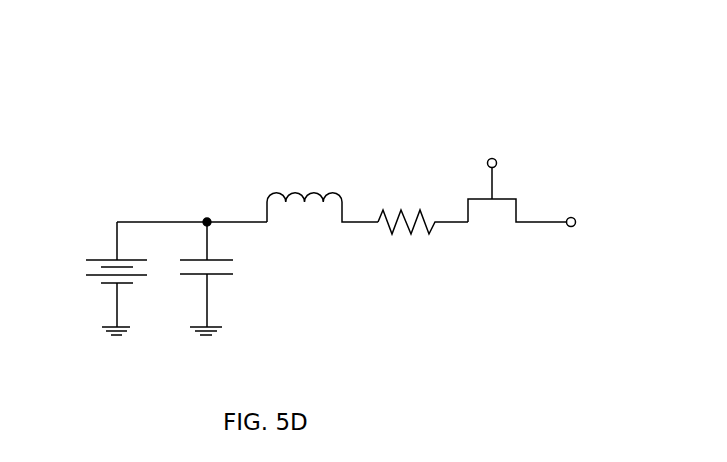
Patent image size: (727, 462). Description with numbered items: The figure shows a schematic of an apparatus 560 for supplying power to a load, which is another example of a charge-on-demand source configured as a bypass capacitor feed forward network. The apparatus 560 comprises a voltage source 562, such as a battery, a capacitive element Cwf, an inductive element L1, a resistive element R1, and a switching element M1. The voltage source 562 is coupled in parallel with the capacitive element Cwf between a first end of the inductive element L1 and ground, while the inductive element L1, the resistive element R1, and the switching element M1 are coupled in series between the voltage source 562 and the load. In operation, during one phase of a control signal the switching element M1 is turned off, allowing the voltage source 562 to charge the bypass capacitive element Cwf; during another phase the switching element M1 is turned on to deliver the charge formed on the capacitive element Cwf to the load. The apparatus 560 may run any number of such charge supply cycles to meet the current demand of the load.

The apparatus 560 is at (461, 76).
The voltage source 562 is at (102, 258).
The capacitive element Cwf is at (222, 278).
The inductive element L1 is at (322, 195).
The resistive element R1 is at (423, 210).
The switching element M1 is at (522, 187).